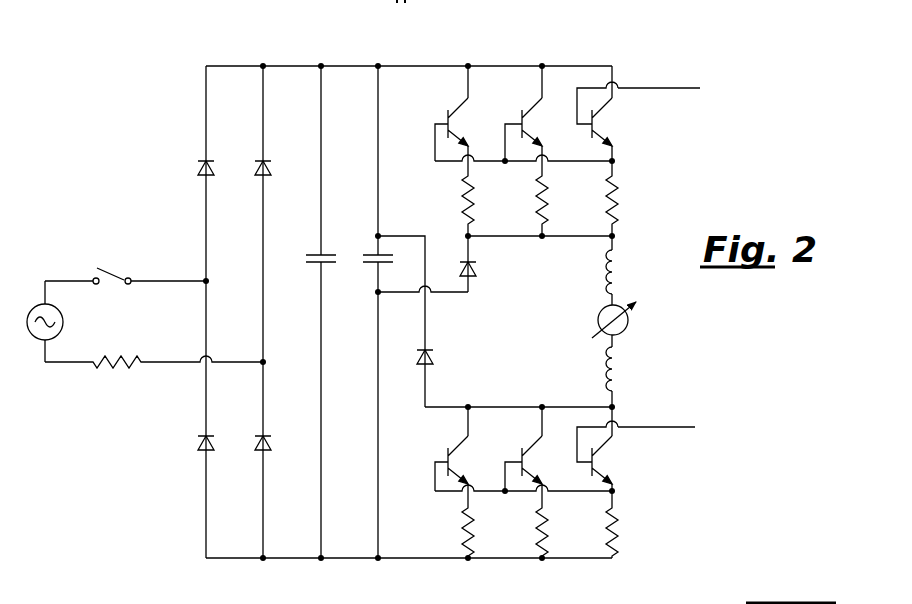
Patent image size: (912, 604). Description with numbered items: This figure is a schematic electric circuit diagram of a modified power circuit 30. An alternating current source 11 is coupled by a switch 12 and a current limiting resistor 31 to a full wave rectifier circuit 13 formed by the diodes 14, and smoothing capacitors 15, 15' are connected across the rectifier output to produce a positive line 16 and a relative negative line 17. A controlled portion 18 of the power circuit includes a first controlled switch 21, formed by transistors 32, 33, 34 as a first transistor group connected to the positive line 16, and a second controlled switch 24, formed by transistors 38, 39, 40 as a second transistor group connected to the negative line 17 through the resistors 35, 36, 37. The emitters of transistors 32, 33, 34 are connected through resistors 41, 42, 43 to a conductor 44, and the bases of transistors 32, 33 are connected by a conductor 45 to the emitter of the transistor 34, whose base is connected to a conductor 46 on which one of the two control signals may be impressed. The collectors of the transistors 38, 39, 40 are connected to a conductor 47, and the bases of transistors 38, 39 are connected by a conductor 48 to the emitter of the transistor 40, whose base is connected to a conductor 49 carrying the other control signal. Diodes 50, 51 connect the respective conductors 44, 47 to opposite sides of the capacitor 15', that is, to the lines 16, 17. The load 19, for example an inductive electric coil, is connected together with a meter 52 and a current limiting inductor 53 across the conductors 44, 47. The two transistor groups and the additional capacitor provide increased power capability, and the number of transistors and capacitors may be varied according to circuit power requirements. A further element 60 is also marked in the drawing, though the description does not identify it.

The alternating current source 11 is at (62, 320).
The switch 12 is at (117, 272).
The full wave rectifier circuit 13 is at (234, 312).
The diodes 14 is at (212, 168).
The smoothing capacitor 15 is at (332, 312).
The smoothing capacitor 15' is at (392, 312).
The positive line 16 is at (348, 66).
The negative line 17 is at (352, 558).
The controlled portion 18 is at (546, 52).
The load 19 is at (620, 378).
The first controlled switch 21 is at (630, 135).
The second controlled switch 24 is at (622, 476).
The modified power circuit 30 is at (204, 58).
The current limiting resistor 31 is at (123, 362).
The transistor 32 is at (455, 124).
The transistor 33 is at (530, 126).
The transistor 34 is at (600, 126).
The resistor 35 is at (476, 527).
The resistor 36 is at (550, 527).
The resistor 37 is at (620, 527).
The transistor 38 is at (456, 472).
The transistor 39 is at (528, 472).
The transistor 40 is at (600, 472).
The resistor 41 is at (478, 202).
The resistor 42 is at (548, 203).
The resistor 43 is at (620, 203).
The conductor 44 is at (572, 236).
The conductor 45 is at (560, 161).
The conductor 46 is at (653, 88).
The conductor 47 is at (508, 407).
The conductor 48 is at (588, 491).
The conductor 49 is at (682, 430).
The diode 50 is at (476, 268).
The diode 51 is at (433, 357).
The meter 52 is at (630, 320).
The current limiting inductor 53 is at (620, 268).
The control circuit 60 is at (158, 603).